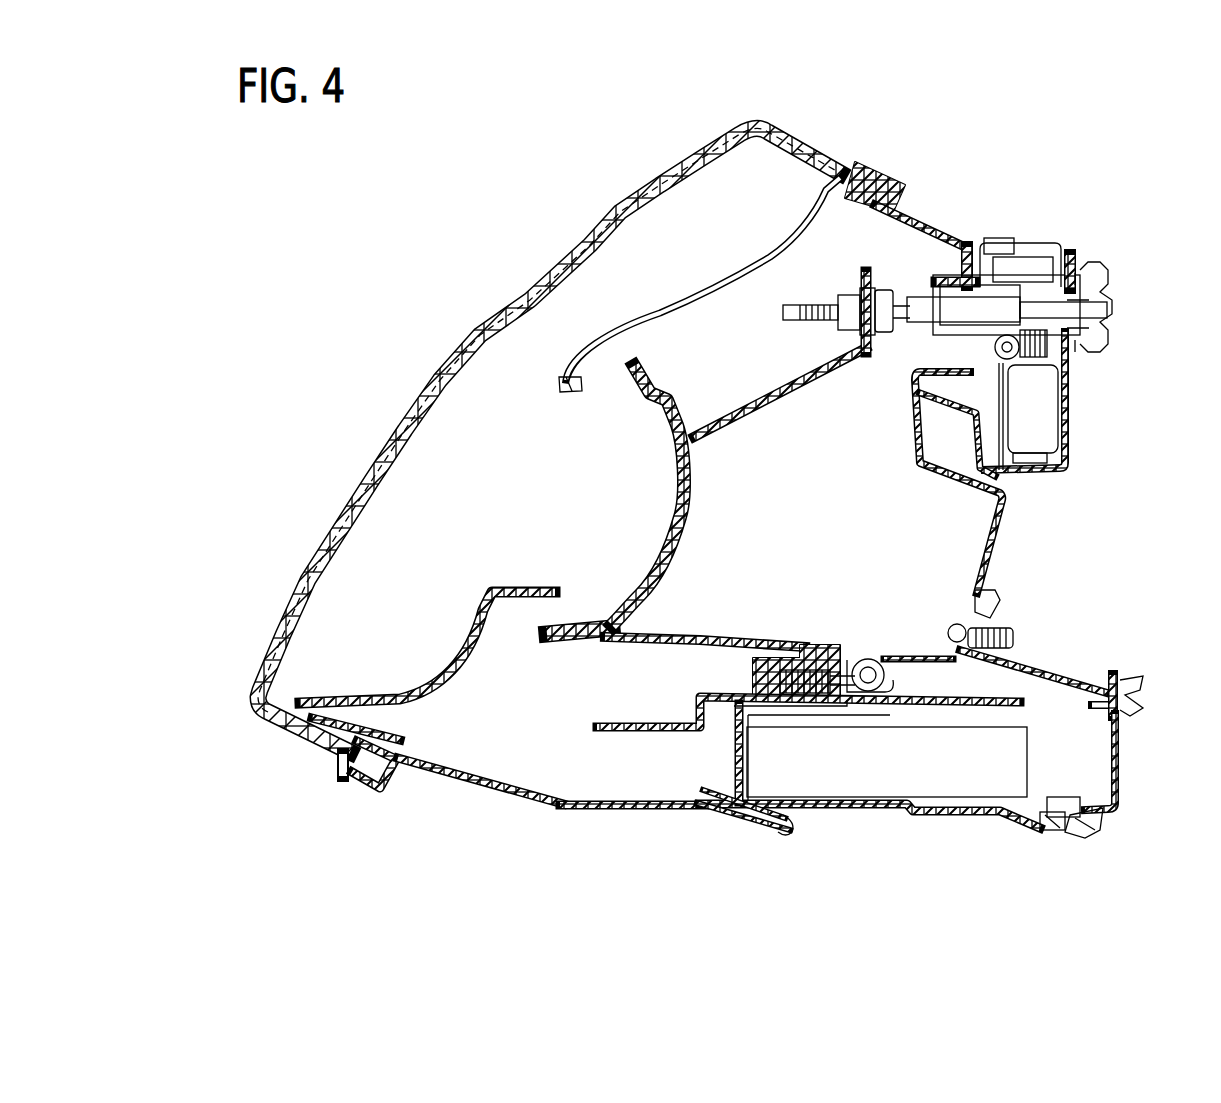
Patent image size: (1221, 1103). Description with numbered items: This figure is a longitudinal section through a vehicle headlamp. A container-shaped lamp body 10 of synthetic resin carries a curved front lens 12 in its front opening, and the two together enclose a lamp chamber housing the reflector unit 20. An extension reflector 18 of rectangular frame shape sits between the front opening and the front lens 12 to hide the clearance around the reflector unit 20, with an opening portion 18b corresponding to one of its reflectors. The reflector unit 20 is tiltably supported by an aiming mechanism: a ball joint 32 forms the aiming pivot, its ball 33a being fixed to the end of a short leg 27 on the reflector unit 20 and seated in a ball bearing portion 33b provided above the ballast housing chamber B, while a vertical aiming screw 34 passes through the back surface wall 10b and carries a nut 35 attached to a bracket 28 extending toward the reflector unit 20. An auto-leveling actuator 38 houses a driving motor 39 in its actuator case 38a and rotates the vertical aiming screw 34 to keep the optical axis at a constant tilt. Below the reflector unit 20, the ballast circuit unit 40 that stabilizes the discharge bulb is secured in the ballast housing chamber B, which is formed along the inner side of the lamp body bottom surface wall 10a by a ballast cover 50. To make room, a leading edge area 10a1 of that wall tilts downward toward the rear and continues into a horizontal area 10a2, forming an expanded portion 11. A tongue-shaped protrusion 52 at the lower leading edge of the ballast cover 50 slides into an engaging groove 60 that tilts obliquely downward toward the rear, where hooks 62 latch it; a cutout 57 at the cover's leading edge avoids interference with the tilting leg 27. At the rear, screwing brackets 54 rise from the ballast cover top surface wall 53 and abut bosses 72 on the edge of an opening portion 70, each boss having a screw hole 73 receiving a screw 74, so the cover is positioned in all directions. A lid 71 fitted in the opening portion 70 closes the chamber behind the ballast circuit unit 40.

The lamp body 10 is at (1008, 500).
The lamp body bottom surface wall 10a is at (853, 806).
The leading edge area of the lamp body bottom surface wall 10a1 is at (487, 790).
The horizontal area of the lamp body bottom surface wall 10a2 is at (598, 812).
The back surface wall 10b is at (925, 440).
The expanded portion 11 is at (652, 815).
The front lens 12 is at (540, 290).
The extension reflector 18 is at (633, 315).
The opening portion of the extension reflector 18b is at (568, 392).
The reflector unit 20 is at (660, 530).
The leg 27 is at (712, 636).
The bracket 28 is at (775, 385).
The ball joint 32 is at (975, 862).
The ball 33a is at (880, 690).
The ball bearing portion 33b is at (865, 692).
The vertical aiming screw 34 is at (812, 300).
The nut 35 is at (884, 312).
The auto-leveling actuator 38 is at (1062, 252).
The actuator case 38a is at (1015, 248).
The driving motor 39 is at (1038, 385).
The ballast circuit unit 40 is at (815, 775).
The ballast cover 50 is at (728, 760).
The tongue-shaped protrusion 52 is at (735, 818).
The ballast cover top surface wall 53 is at (920, 700).
The screwing bracket 54 is at (988, 600).
The cutout 57 is at (763, 700).
The engaging groove 60 is at (778, 828).
The hook 62 is at (760, 818).
The opening portion 70 is at (1070, 800).
The lid 71 is at (1120, 745).
The boss 72 is at (975, 665).
The screw hole 73 is at (990, 635).
The screw 74 is at (955, 625).
The ballast housing chamber B is at (1067, 765).